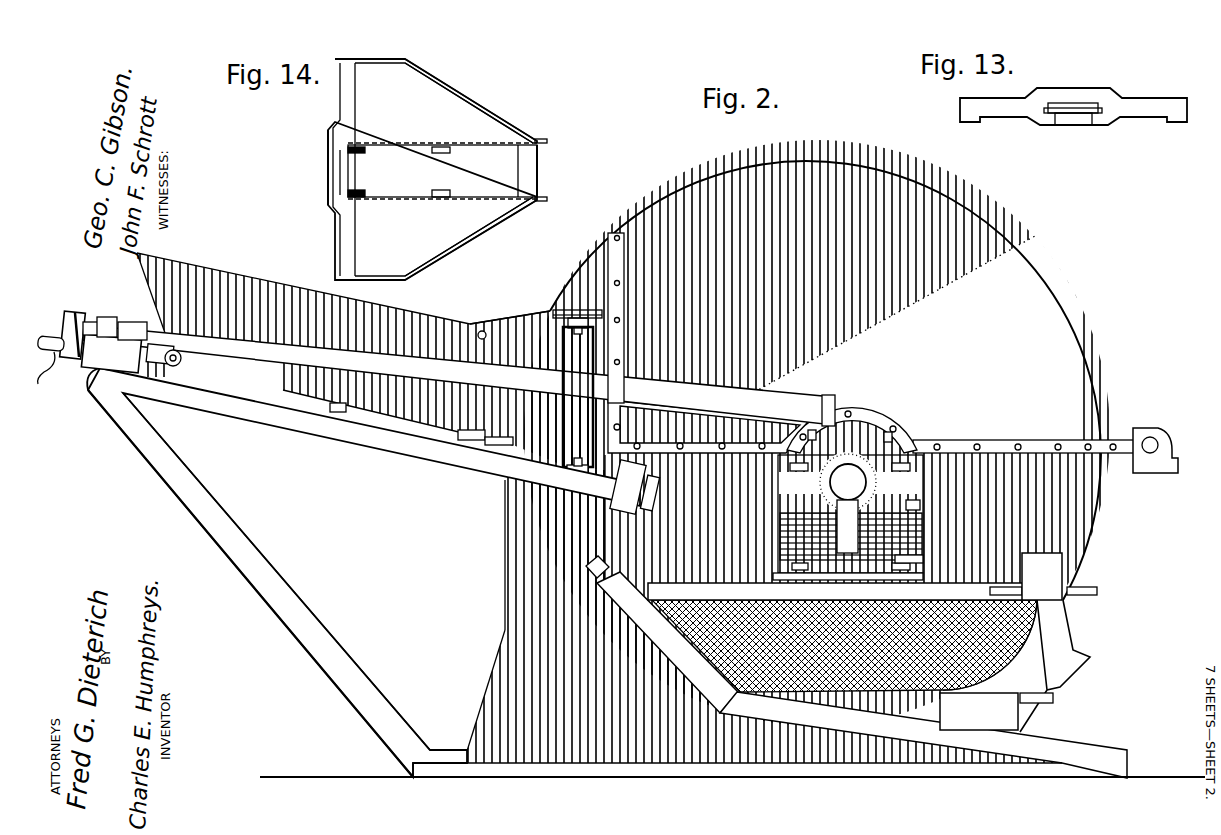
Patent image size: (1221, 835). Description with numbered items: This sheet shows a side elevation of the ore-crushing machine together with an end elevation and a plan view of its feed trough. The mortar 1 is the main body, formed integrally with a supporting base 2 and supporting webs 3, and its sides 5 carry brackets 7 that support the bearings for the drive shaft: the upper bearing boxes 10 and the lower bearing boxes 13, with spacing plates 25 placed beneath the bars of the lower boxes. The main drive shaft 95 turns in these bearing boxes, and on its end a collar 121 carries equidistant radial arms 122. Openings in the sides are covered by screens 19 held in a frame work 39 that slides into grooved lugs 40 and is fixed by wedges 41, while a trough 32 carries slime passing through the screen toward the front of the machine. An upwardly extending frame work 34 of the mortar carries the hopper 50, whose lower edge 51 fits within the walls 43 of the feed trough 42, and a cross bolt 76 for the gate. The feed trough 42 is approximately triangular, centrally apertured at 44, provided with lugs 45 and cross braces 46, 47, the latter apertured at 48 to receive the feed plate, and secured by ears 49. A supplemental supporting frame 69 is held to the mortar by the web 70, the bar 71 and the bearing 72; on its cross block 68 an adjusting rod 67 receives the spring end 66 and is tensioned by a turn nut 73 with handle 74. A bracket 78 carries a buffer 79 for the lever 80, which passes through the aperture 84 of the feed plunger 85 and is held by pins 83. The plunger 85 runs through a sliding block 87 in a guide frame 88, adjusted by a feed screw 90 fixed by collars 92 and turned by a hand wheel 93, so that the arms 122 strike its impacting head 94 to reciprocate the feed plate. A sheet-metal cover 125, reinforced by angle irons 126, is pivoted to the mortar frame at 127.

In FIG. 2, the mortar 1 is at (993, 530).
In FIG. 2, the supporting base 2 is at (690, 779).
In FIG. 2, the supporting webs 3 is at (501, 615).
In FIG. 2, the sides of the mortar 5 is at (690, 517).
In FIG. 2, the brackets 7 is at (905, 561).
In FIG. 2, the upper bearing boxes 10 is at (886, 444).
In FIG. 2, the lower bearing boxes 13 is at (915, 505).
In FIG. 2, the screens 19 is at (844, 646).
In FIG. 2, the spacing plates 25 is at (781, 536).
In FIG. 2, the trough 32 is at (887, 680).
In FIG. 2, the upwardly extending frame work 34 is at (522, 320).
In FIG. 2, the frame work 39 is at (838, 644).
In FIG. 2, the grooved lugs 40 is at (1001, 641).
In FIG. 2, the wedges 41 is at (1100, 591).
In FIG. 14, the feed trough 42 is at (432, 169).
In FIG. 13, the feed trough 42 is at (1073, 89).
In FIG. 2, the feed trough 42 is at (400, 394).
In FIG. 14, the walls 43 is at (512, 125).
In FIG. 14, the central aperture 44 is at (442, 171).
In FIG. 13, the central aperture 44 is at (1080, 108).
In FIG. 14, the lugs 45 is at (365, 186).
In FIG. 2, the lugs 45 is at (336, 412).
In FIG. 14, the cross brace 46 is at (537, 182).
In FIG. 13, the cross brace 46 is at (1082, 127).
In FIG. 14, the cross brace 47 is at (330, 160).
In FIG. 13, the cross brace 47 is at (1088, 92).
In FIG. 14, the aperture 48 is at (350, 176).
In FIG. 14, the ears 49 is at (546, 140).
In FIG. 2, the hopper 50 is at (232, 286).
In FIG. 2, the lower edge of the hopper 51 is at (500, 410).
In FIG. 2, the end of the coil spring 66 is at (178, 368).
In FIG. 2, the adjusting rod 67 is at (160, 366).
In FIG. 2, the cross block 68 is at (100, 380).
In FIG. 2, the supplemental supporting frame 69 is at (258, 578).
In FIG. 2, the web 70 is at (449, 764).
In FIG. 2, the bar 71 is at (428, 450).
In FIG. 2, the bearing 72 is at (626, 512).
In FIG. 2, the turn nut 73 is at (49, 337).
In FIG. 2, the handle 74 is at (50, 374).
In FIG. 2, the cross bolt 76 is at (482, 330).
In FIG. 2, the bracket 78 is at (91, 322).
In FIG. 2, the buffer 79 is at (70, 311).
In FIG. 2, the lever 80 is at (114, 320).
In FIG. 2, the pins 83 is at (111, 353).
In FIG. 2, the aperture 84 is at (138, 324).
In FIG. 2, the feed plunger 85 is at (458, 375).
In FIG. 2, the sliding block 87 is at (565, 402).
In FIG. 2, the guide frame 88 is at (570, 470).
In FIG. 2, the feed screw 90 is at (590, 325).
In FIG. 2, the collars 92 is at (572, 332).
In FIG. 2, the hand wheel 93 is at (577, 311).
In FIG. 2, the impacting head 94 is at (826, 397).
In FIG. 2, the main drive shaft 95 is at (848, 482).
In FIG. 2, the collar 121 is at (810, 441).
In FIG. 2, the radial arms 122 is at (871, 410).
In FIG. 2, the cover 125 is at (922, 232).
In FIG. 2, the angle irons 126 is at (993, 441).
In FIG. 2, the pivot 127 is at (1153, 434).